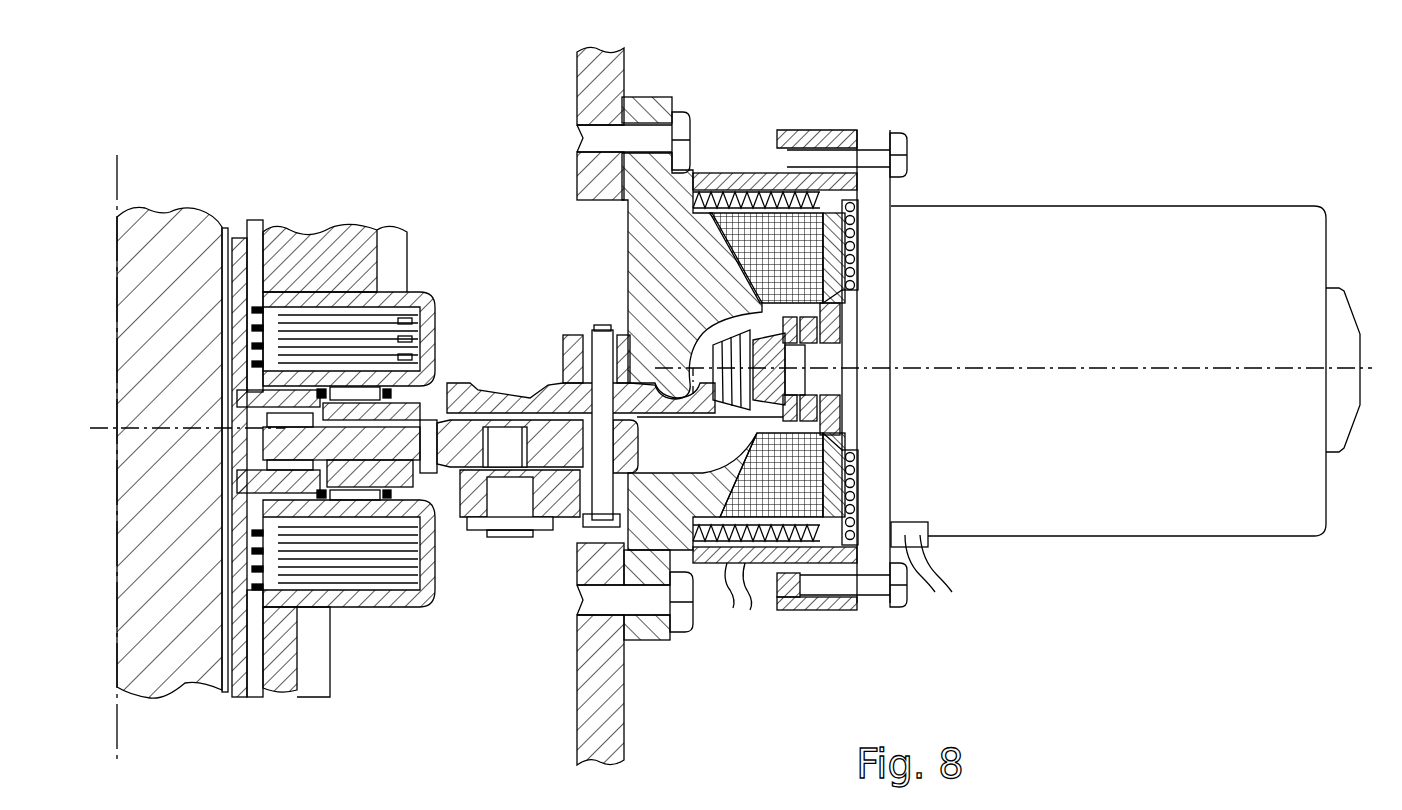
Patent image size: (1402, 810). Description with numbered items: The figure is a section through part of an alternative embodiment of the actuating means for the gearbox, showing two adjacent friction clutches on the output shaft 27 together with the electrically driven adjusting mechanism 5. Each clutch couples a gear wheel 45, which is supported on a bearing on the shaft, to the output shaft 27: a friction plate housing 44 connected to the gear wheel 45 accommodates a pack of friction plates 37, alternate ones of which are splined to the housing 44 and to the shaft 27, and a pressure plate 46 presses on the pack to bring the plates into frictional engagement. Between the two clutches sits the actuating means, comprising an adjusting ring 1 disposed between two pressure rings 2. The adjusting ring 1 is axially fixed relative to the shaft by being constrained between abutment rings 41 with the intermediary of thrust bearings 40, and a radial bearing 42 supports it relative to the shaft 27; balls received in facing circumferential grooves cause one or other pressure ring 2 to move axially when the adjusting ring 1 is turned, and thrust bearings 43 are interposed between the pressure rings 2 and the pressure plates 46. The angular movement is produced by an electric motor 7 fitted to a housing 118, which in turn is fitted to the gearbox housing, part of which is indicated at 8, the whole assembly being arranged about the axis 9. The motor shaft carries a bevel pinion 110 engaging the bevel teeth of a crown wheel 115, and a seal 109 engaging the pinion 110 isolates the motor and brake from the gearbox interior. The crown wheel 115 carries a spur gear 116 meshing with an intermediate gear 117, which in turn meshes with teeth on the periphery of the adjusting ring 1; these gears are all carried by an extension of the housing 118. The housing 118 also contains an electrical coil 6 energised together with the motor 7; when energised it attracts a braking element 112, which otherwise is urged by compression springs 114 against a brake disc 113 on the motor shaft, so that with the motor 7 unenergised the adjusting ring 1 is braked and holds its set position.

The adjusting ring 1 is at (422, 466).
The pressure rings 2 is at (407, 407).
The adjusting mechanism 5 is at (570, 527).
The electrical coil 6 is at (792, 222).
The electric motor 7 is at (1087, 220).
The gearbox housing 8 is at (622, 62).
The axis 9 is at (722, 458).
The output shaft 27 is at (147, 656).
The friction plates 37 is at (383, 330).
The thrust bearings 40 is at (247, 390).
The abutment rings 41 is at (245, 402).
The radial bearing 42 is at (243, 450).
The thrust bearings 43 is at (350, 390).
The friction plate housing 44 is at (420, 293).
The gear wheel 45 is at (385, 263).
The pressure plate 46 is at (428, 376).
The seal 109 is at (805, 322).
The bevel pinion 110 is at (783, 357).
The braking element 112 is at (833, 560).
The brake disc 113 is at (860, 577).
The compression springs 114 is at (720, 205).
The crown wheel 115 is at (553, 393).
The spur gear 116 is at (620, 437).
The intermediate gear 117 is at (463, 473).
The housing 118 is at (650, 633).